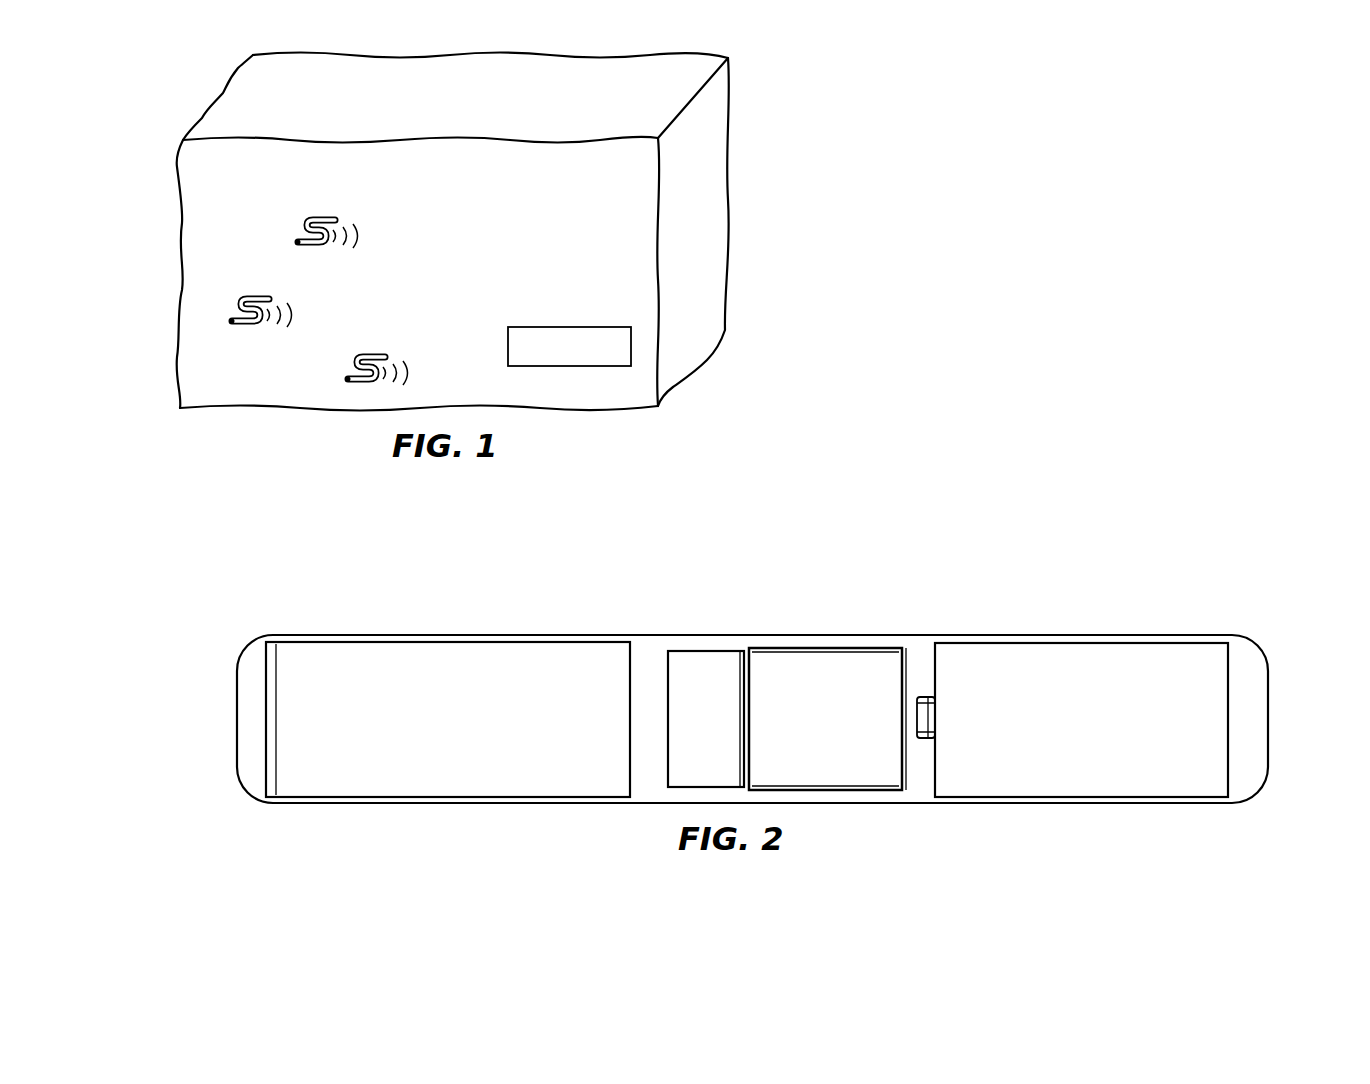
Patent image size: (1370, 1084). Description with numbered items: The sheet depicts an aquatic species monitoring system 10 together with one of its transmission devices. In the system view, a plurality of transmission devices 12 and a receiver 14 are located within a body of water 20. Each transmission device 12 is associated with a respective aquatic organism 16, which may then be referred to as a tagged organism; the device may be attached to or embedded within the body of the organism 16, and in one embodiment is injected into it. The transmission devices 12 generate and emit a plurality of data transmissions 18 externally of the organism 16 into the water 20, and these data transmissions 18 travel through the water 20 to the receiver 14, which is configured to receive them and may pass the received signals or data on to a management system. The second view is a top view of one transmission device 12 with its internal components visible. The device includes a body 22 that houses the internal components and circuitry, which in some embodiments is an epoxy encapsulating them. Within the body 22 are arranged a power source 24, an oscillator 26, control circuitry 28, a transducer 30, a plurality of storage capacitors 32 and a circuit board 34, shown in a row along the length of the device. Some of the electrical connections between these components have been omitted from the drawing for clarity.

In FIG. 1, the aquatic species monitoring system 10 is at (453, 250).
In FIG. 1, the transmission device 12 is at (299, 241).
In FIG. 2, the transmission device 12 is at (788, 678).
In FIG. 1, the receiver 14 is at (558, 366).
In FIG. 1, the aquatic organism 16 is at (322, 203).
In FIG. 1, the data transmission 18 is at (361, 240).
In FIG. 1, the body of water 20 is at (584, 218).
In FIG. 2, the body 22 is at (793, 635).
In FIG. 2, the power source 24 is at (430, 731).
In FIG. 2, the oscillator 26 is at (695, 648).
In FIG. 2, the control circuitry 28 is at (863, 648).
In FIG. 2, the transducer 30 is at (1074, 729).
In FIG. 2, the storage capacitor 32 is at (925, 702).
In FIG. 2, the circuit board 34 is at (922, 775).